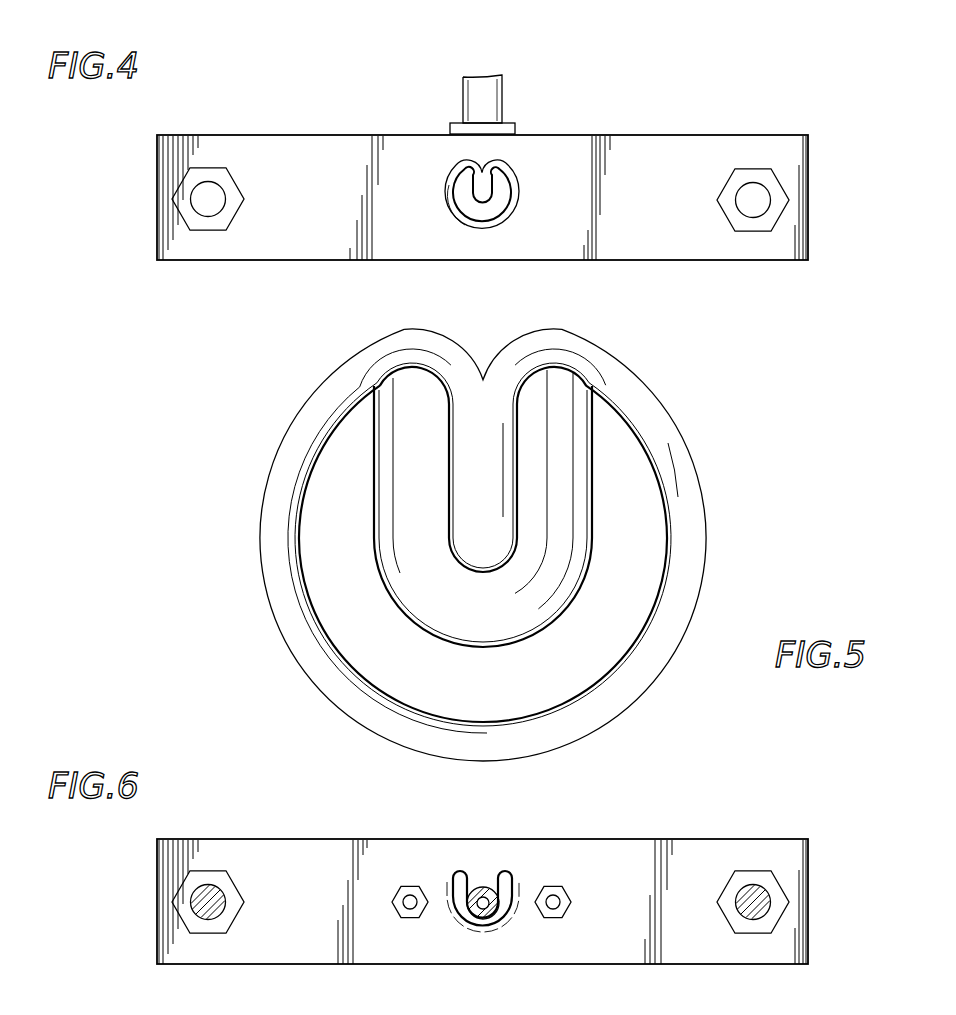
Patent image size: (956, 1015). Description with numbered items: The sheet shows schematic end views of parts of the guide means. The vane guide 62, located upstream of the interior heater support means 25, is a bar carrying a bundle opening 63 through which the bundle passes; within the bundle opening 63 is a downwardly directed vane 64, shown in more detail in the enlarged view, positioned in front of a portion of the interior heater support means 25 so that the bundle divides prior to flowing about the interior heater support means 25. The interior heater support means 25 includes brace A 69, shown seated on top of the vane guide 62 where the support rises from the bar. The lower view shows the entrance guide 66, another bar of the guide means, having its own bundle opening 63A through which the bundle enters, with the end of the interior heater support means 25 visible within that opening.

In FIG. 4, the interior heater support means 25 is at (510, 75).
In FIG. 5, the interior heater support means 25 is at (600, 524).
In FIG. 6, the interior heater support means 25 is at (487, 880).
In FIG. 4, the vane guide 62 is at (404, 133).
In FIG. 4, the bundle opening 63 is at (454, 208).
In FIG. 5, the bundle opening 63 is at (327, 562).
In FIG. 6, the bundle opening 63A is at (458, 872).
In FIG. 5, the vane 64 is at (522, 495).
In FIG. 6, the entrance guide 66 is at (302, 838).
In FIG. 4, the brace A 69 is at (514, 130).